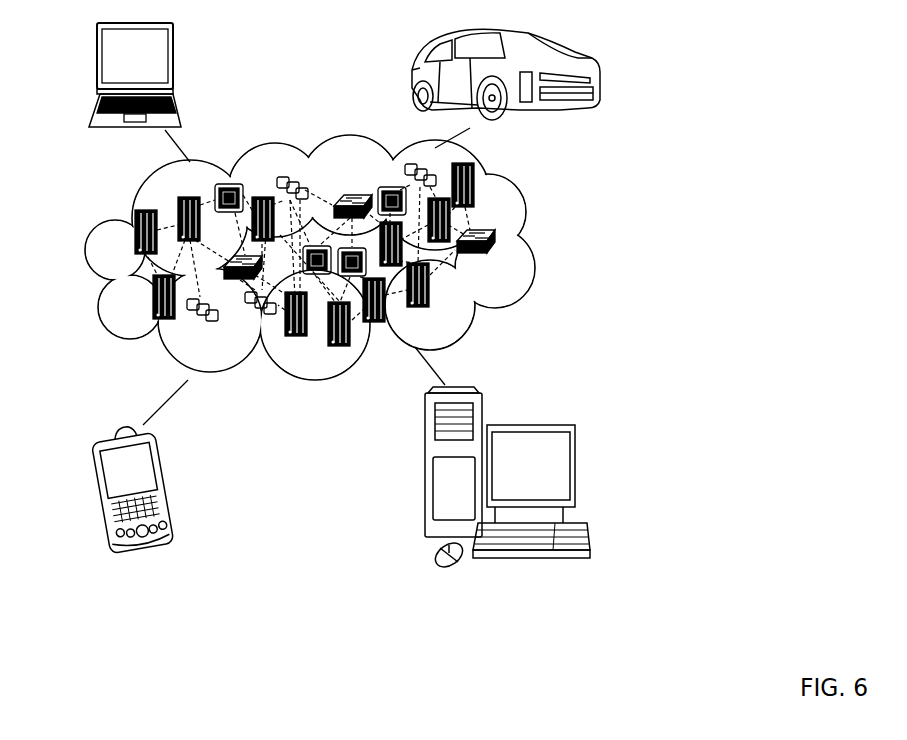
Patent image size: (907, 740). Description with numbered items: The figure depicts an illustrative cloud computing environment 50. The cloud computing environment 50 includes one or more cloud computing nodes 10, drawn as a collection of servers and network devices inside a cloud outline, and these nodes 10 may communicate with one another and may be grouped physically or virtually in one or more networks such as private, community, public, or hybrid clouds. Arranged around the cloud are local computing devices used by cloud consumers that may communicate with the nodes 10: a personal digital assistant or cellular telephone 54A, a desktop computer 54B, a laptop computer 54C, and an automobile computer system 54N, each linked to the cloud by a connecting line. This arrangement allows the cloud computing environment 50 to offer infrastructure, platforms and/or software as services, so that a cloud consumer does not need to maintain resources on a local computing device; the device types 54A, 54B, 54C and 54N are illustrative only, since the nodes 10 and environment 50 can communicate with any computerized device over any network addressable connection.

The cloud computing nodes 10 is at (497, 258).
The cloud computing environment 50 is at (517, 223).
The personal digital assistant or cellular telephone 54A is at (170, 488).
The desktop computer 54B is at (537, 408).
The laptop computer 54C is at (174, 67).
The automobile computer system 54N is at (412, 73).